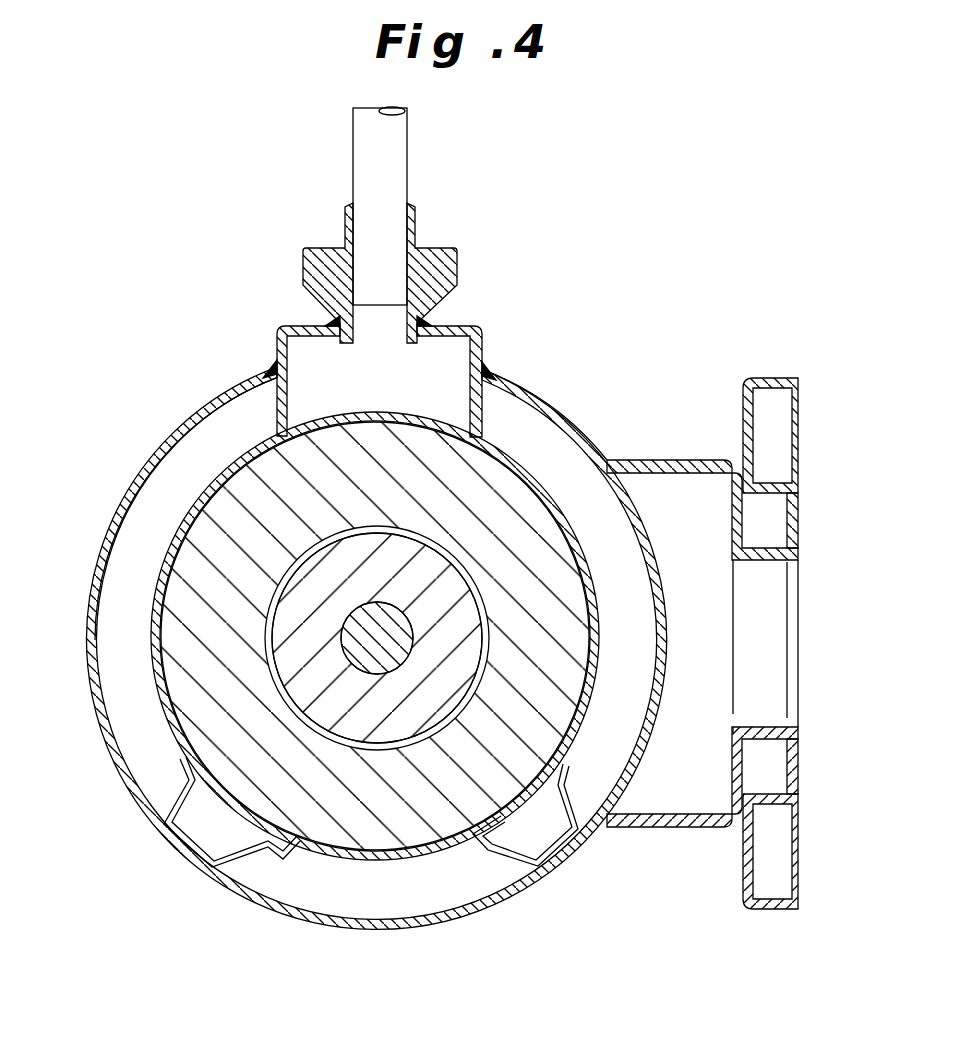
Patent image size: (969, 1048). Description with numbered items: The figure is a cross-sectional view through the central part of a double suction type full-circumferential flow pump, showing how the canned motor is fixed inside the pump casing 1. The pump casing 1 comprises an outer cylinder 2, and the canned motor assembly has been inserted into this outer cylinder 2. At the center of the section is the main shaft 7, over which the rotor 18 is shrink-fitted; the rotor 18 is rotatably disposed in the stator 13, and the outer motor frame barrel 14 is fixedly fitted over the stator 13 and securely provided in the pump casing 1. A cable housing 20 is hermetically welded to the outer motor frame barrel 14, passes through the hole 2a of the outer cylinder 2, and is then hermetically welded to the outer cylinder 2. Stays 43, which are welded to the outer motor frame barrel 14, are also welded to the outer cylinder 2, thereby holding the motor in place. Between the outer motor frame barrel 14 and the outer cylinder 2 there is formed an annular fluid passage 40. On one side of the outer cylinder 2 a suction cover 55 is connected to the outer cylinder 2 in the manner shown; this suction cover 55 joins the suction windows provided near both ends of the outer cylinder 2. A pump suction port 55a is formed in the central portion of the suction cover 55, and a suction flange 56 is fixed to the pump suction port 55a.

The pump casing 1 is at (595, 436).
The outer cylinder 2 is at (468, 929).
The hole 2a is at (475, 400).
The main shaft 7 is at (352, 613).
The stator 13 is at (565, 626).
The outer motor frame barrel 14 is at (312, 848).
The rotor 18 is at (292, 663).
The cable housing 20 is at (515, 390).
The annular fluid passage 40 is at (178, 484).
The stays 43 is at (190, 803).
The suction cover 55 is at (678, 462).
The pump suction port 55a is at (725, 690).
The suction flange 56 is at (748, 432).